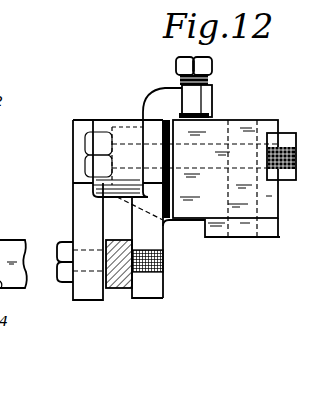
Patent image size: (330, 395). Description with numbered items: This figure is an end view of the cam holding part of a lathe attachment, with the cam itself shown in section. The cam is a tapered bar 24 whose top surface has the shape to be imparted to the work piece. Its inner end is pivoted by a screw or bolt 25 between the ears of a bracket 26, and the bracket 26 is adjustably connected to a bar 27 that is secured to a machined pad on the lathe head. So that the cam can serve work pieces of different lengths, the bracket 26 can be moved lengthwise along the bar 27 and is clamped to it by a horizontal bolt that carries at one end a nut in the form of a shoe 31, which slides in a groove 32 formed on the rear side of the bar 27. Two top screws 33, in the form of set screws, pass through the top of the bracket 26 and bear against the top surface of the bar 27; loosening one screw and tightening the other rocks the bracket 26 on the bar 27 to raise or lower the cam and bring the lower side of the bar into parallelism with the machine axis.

The tapered bar 24 is at (118, 289).
The screw or bolt 25 is at (65, 241).
The bracket 26 is at (72, 176).
The bar 27 is at (216, 237).
The shoe 31 is at (288, 176).
The groove 32 is at (278, 130).
The top screws 33 is at (177, 62).